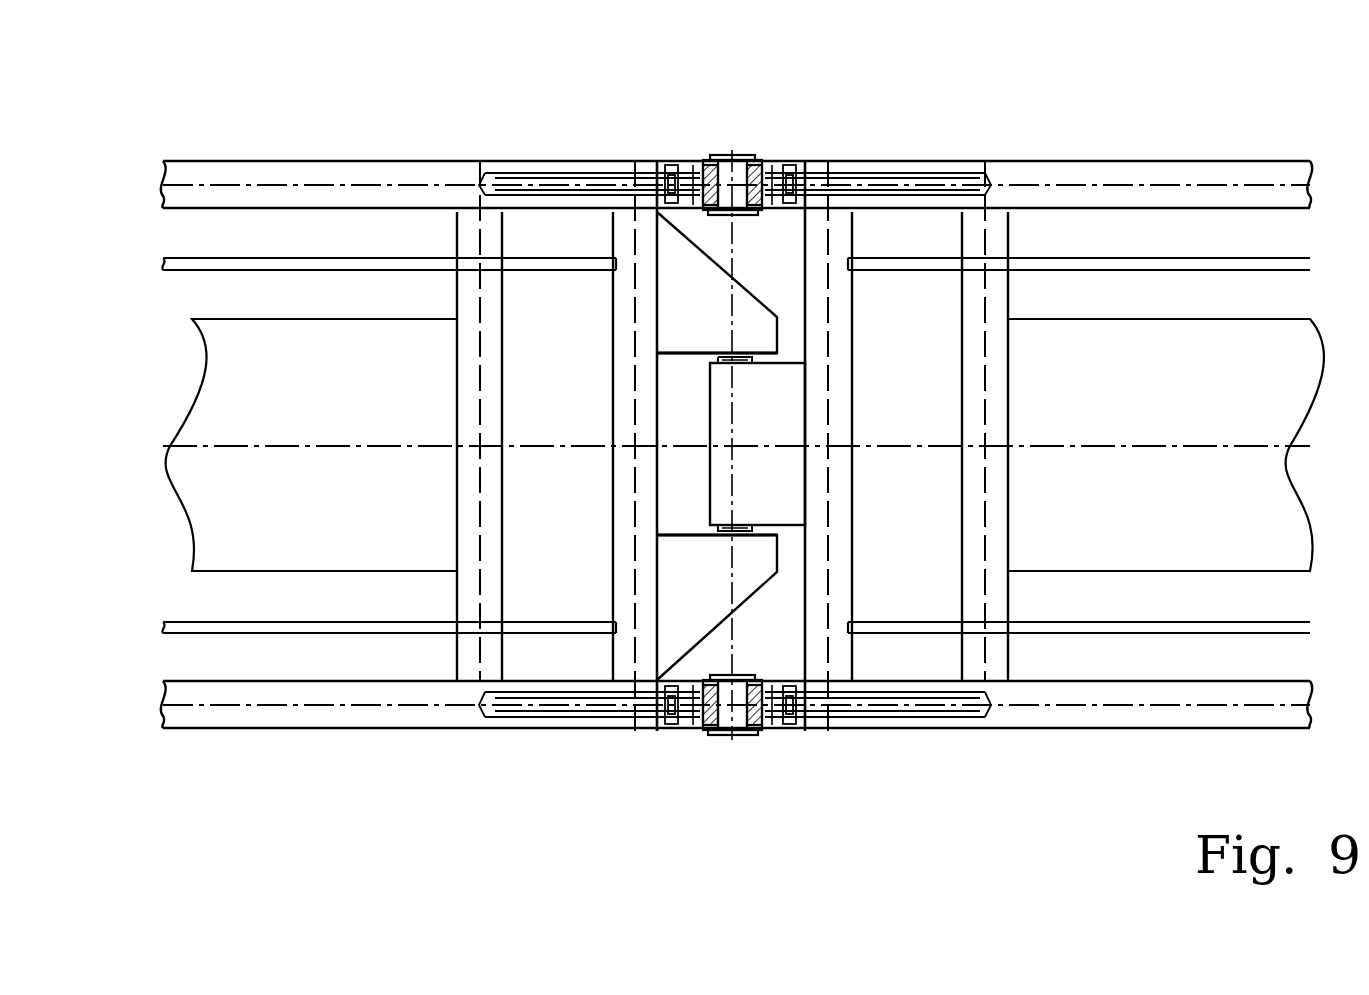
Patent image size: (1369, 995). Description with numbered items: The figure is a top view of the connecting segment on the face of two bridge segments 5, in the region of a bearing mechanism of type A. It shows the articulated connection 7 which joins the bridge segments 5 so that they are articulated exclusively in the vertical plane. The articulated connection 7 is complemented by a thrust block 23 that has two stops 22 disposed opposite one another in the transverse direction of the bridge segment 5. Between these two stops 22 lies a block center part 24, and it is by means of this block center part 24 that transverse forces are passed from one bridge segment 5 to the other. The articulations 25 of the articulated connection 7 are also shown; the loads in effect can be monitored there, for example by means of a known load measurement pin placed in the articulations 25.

The bridge segment 5 is at (307, 740).
The articulated connection 7 is at (764, 772).
The stop 22 is at (752, 318).
The thrust block 23 is at (792, 602).
The block center part 24 is at (792, 417).
The articulation 25 is at (733, 162).